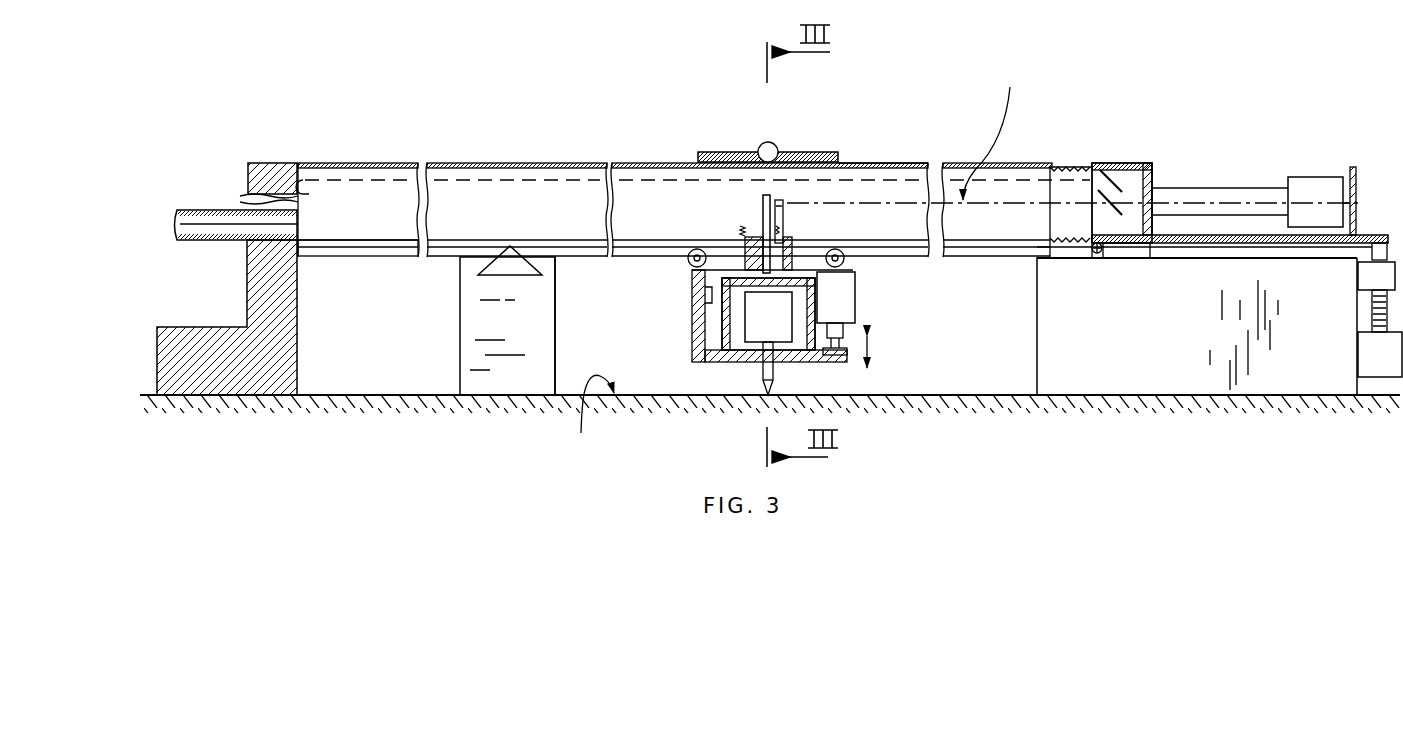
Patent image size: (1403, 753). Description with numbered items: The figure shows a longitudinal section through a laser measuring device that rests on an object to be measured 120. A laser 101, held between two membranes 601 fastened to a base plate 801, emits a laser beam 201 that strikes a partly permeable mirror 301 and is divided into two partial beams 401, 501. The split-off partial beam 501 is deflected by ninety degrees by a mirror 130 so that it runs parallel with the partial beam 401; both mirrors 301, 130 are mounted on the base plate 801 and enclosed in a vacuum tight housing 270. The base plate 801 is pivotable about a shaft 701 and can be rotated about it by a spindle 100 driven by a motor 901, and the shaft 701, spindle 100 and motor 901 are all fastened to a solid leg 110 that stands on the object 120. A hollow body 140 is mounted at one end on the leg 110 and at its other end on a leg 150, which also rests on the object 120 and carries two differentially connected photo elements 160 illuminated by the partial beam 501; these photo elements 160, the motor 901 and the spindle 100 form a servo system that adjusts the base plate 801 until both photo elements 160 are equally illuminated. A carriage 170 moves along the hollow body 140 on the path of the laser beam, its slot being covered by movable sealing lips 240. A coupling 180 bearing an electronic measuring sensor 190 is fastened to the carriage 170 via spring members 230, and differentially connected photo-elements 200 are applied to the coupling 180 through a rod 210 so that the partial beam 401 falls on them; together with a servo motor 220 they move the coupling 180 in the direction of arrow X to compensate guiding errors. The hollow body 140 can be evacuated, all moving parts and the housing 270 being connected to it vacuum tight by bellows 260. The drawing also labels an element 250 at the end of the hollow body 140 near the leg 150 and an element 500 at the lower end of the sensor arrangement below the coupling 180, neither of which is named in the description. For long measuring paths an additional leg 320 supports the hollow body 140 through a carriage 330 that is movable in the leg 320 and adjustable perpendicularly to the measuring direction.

The spindle 100 is at (1355, 265).
The laser 101 is at (1303, 185).
The solid leg 110 is at (1283, 378).
The object to be measured 120 is at (796, 360).
The mirror 130 is at (1117, 167).
The hollow body 140 is at (908, 165).
The leg 150 is at (283, 163).
The photo elements 160 is at (308, 166).
The carriage 170 is at (832, 152).
The coupling 180 is at (718, 348).
The electronic measuring sensor 190 is at (744, 311).
The photo-elements 200 is at (772, 196).
The laser beam 201 is at (1147, 248).
The rod 210 is at (765, 213).
The servo motor 220 is at (848, 298).
The spring members 230 is at (693, 272).
The sealing lips 240 is at (348, 252).
The cantilever arm 250 is at (214, 207).
The bellows 260 is at (780, 230).
The vacuum tight housing 270 is at (1146, 162).
The partly permeable mirror 301 is at (1106, 216).
The leg 320 is at (478, 342).
The carriage 330 is at (498, 262).
The partial beam 401 is at (999, 132).
The tool spindle 500 is at (773, 388).
The partial beam 501 is at (997, 198).
The membranes 601 is at (1153, 177).
The shaft 701 is at (1097, 254).
The base plate 801 is at (1227, 243).
The motor 901 is at (1375, 353).